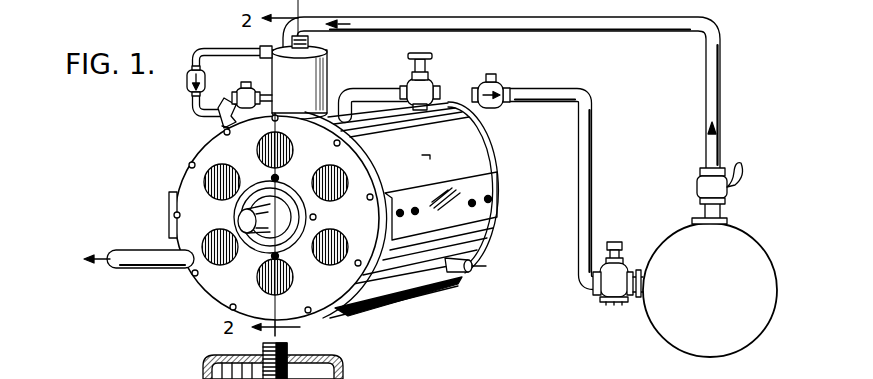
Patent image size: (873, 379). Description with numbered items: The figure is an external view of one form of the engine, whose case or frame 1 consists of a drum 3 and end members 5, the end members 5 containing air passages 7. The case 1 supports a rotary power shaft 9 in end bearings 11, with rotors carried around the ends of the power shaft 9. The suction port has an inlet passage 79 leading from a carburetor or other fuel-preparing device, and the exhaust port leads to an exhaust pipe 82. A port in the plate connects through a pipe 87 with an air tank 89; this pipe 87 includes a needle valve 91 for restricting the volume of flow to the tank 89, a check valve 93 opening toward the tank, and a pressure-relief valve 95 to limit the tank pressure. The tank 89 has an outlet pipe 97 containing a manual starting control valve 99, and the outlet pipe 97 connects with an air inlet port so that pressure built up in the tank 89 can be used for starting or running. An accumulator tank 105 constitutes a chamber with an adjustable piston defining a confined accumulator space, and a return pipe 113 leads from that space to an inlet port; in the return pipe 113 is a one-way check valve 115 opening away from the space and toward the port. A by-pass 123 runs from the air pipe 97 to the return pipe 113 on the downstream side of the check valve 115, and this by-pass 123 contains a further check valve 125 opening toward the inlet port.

The case or frame 1 is at (412, 210).
The drum 3 is at (398, 282).
The end members 5 is at (490, 153).
The air passages 7 is at (293, 152).
The rotary power shaft 9 is at (262, 244).
The end bearings 11 is at (290, 195).
The inlet passage 79 is at (468, 272).
The exhaust pipe 82 is at (135, 266).
The pipe 87 is at (344, 95).
The air tank 89 is at (710, 290).
The needle valve 91 is at (426, 90).
The check valve 93 is at (497, 103).
The pressure-relief valve 95 is at (618, 266).
The outlet pipe 97 is at (282, 31).
The manual starting control valve 99 is at (718, 190).
The accumulator tank 105 is at (322, 68).
The return pipe 113 is at (223, 100).
The one-way connection (check valve) 115 is at (245, 90).
The by-pass 123 is at (198, 52).
The check valve 125 is at (185, 82).